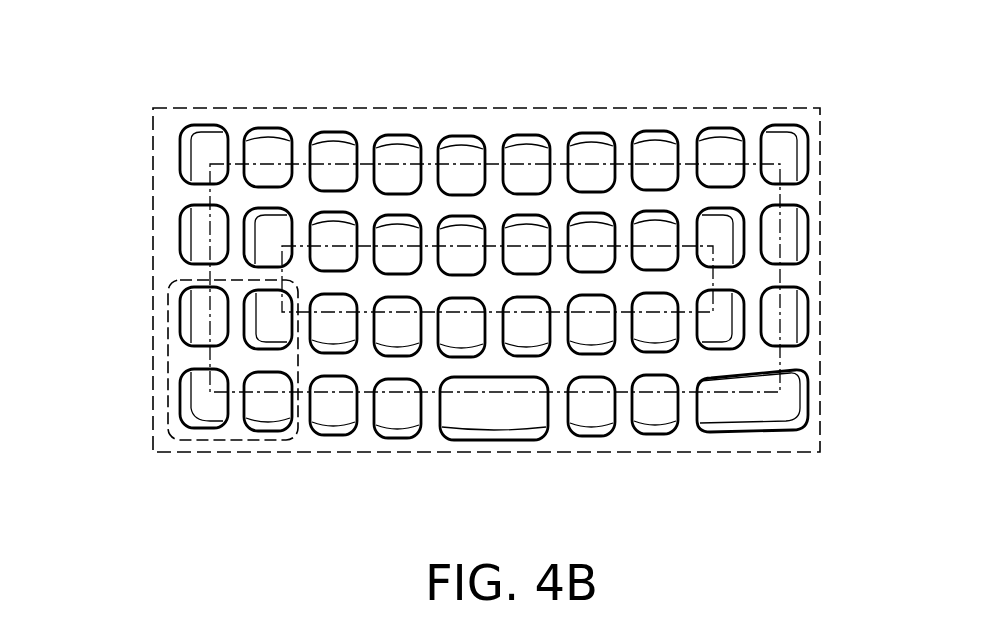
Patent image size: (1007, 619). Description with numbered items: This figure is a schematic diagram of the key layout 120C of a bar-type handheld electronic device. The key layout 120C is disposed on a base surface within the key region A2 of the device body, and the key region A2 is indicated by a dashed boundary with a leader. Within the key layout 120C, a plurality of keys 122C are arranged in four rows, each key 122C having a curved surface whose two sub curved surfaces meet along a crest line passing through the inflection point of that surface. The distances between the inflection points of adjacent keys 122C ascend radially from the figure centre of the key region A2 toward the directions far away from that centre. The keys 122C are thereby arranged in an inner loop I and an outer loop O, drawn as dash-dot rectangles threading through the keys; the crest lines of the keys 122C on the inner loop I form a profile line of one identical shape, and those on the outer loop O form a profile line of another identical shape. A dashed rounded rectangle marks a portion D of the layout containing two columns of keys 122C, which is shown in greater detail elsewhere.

The key layout 120C is at (175, 133).
The key 122C is at (328, 132).
The outer loop O is at (780, 197).
The inner loop I is at (713, 278).
The portion D is at (167, 348).
The key region A2 is at (200, 413).